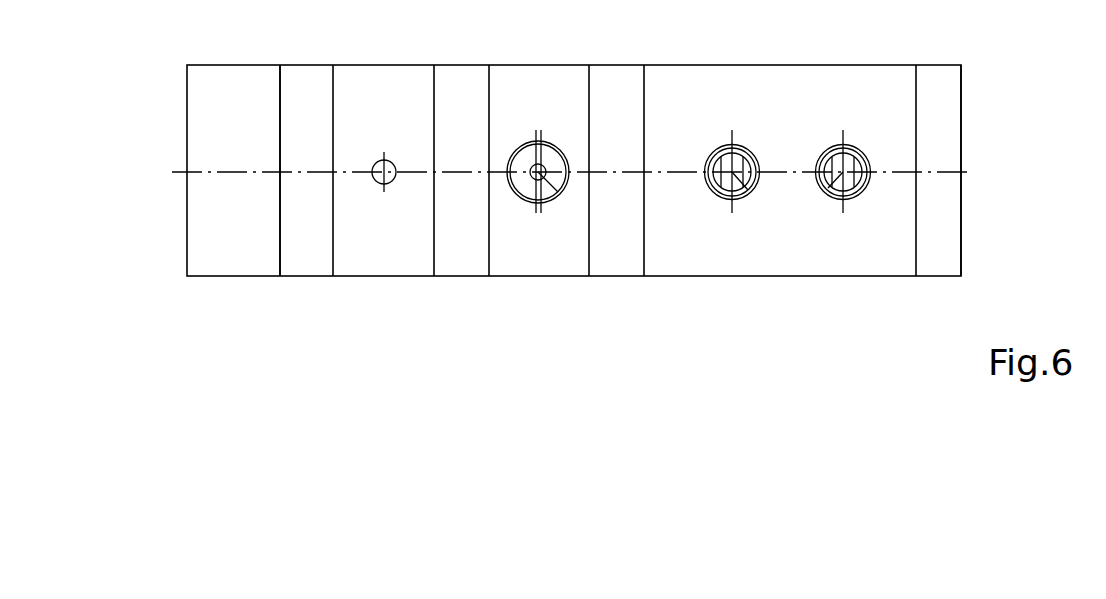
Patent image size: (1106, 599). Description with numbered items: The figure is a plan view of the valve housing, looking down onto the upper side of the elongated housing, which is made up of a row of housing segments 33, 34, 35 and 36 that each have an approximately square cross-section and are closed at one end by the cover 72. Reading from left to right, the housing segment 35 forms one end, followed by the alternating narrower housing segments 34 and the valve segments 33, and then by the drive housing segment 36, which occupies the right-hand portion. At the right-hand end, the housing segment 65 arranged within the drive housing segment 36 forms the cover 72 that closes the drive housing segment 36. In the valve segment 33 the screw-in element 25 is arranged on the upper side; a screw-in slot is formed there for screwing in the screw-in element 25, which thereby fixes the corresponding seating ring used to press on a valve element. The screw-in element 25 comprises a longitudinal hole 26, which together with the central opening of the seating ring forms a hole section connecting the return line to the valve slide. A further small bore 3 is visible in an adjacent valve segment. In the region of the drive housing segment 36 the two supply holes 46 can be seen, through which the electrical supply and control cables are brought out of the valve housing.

The bore 3 is at (384, 158).
The screw-in element 25 is at (523, 188).
The longitudinal hole 26 is at (560, 190).
The valve segment 33 is at (530, 82).
The housing segment 34 is at (306, 268).
The housing segment 35 is at (198, 105).
The drive housing segment 36 is at (745, 88).
The supply holes 46 is at (820, 183).
The housing segment 65 is at (1002, 170).
The cover 72 is at (950, 117).